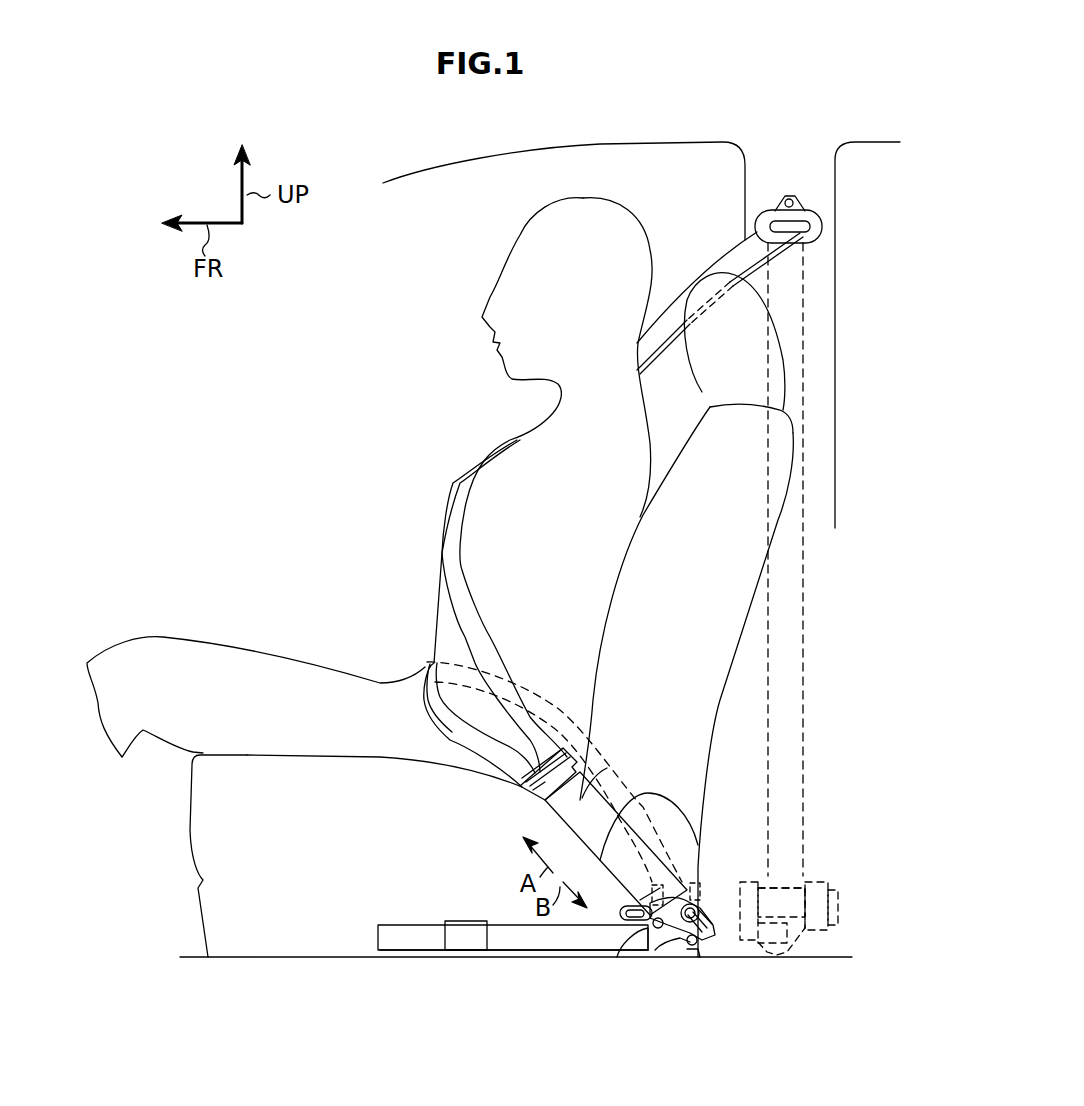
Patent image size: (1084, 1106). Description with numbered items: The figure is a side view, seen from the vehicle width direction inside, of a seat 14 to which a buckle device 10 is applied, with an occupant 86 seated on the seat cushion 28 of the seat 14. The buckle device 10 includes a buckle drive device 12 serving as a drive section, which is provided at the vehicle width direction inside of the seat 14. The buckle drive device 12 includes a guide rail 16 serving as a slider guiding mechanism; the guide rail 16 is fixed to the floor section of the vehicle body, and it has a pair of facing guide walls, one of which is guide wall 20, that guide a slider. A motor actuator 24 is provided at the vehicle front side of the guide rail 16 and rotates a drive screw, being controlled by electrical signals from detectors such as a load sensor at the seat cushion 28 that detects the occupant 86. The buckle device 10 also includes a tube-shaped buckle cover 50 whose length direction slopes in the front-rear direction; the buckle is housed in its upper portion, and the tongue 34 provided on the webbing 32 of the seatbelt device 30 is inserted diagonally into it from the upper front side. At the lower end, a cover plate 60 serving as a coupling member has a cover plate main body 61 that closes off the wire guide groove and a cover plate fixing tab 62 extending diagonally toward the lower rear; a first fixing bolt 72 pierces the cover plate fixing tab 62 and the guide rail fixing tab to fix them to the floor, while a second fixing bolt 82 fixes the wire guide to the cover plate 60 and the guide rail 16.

The buckle device 10 is at (452, 843).
The buckle drive device 12 is at (513, 933).
The seat 14 is at (743, 646).
The guide rail 16 is at (551, 950).
The guide wall 20 is at (520, 950).
The motor actuator 24 is at (443, 921).
The seat cushion 28 is at (312, 752).
The seatbelt device 30 is at (822, 758).
The webbing 32 is at (455, 488).
The tongue 34 is at (520, 797).
The buckle cover 50 is at (617, 768).
The cover plate 60 is at (660, 938).
The cover plate main body 61 is at (703, 923).
The cover plate fixing tab 62 is at (668, 928).
The first fixing bolt 72 is at (690, 947).
The second fixing bolt 82 is at (627, 920).
The occupant 86 is at (500, 477).